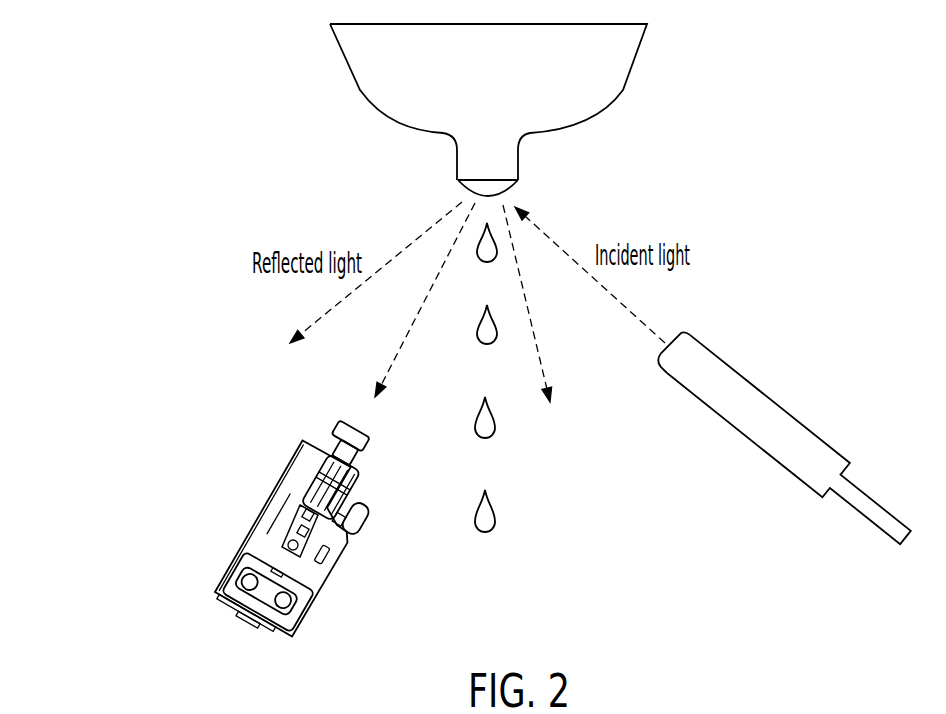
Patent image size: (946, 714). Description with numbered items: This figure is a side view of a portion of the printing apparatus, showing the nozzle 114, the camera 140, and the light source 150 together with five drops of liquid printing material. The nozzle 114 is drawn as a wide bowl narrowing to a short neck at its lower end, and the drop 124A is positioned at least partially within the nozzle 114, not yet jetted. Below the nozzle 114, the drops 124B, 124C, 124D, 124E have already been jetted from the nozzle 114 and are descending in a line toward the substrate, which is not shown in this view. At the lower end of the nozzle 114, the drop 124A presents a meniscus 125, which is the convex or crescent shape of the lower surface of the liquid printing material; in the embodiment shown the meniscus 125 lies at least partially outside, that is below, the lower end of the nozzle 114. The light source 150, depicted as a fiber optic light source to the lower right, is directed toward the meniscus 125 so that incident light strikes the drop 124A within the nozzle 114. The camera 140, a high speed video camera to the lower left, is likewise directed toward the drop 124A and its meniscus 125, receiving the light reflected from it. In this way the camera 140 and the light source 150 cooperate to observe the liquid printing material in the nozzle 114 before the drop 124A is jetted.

The nozzle 114 is at (600, 92).
The drop 124A is at (518, 188).
The meniscus 125 is at (444, 190).
The drop 124B is at (476, 258).
The drop 124C is at (476, 339).
The drop 124D is at (497, 428).
The drop 124E is at (497, 522).
The camera 140 is at (257, 525).
The light source 150 is at (775, 403).